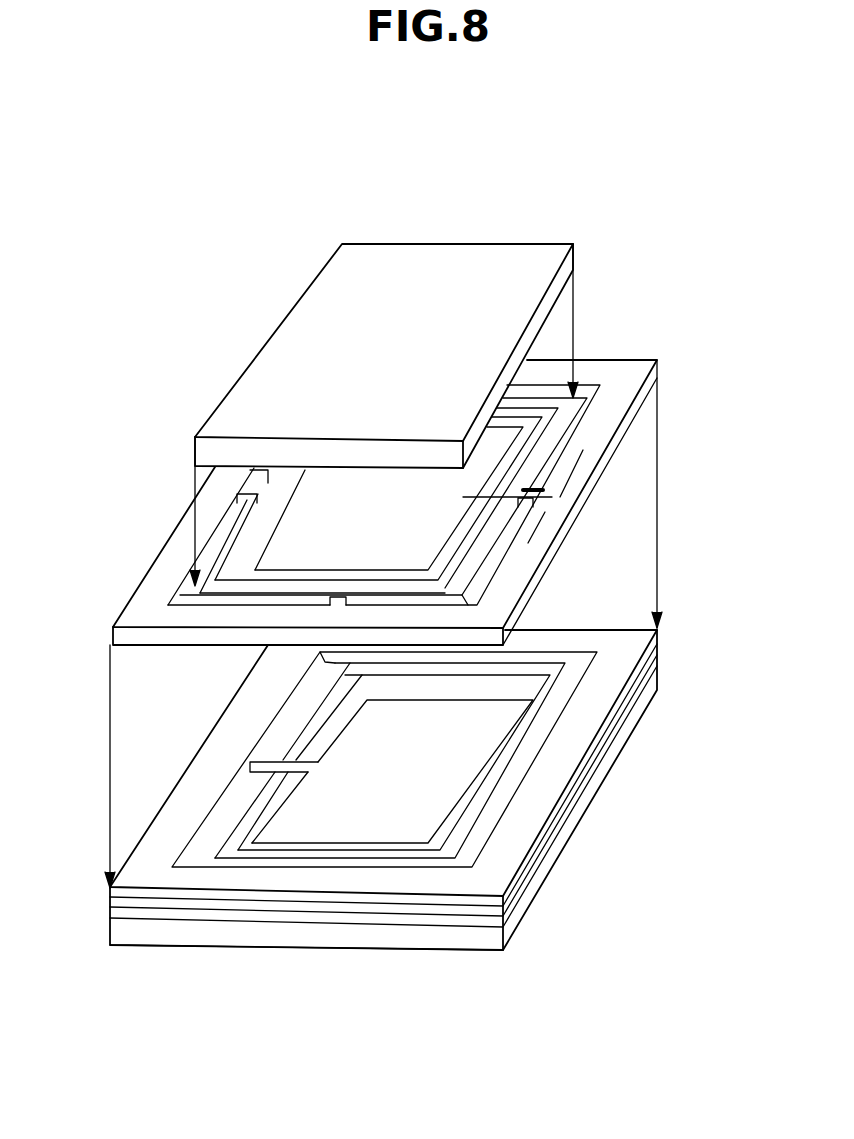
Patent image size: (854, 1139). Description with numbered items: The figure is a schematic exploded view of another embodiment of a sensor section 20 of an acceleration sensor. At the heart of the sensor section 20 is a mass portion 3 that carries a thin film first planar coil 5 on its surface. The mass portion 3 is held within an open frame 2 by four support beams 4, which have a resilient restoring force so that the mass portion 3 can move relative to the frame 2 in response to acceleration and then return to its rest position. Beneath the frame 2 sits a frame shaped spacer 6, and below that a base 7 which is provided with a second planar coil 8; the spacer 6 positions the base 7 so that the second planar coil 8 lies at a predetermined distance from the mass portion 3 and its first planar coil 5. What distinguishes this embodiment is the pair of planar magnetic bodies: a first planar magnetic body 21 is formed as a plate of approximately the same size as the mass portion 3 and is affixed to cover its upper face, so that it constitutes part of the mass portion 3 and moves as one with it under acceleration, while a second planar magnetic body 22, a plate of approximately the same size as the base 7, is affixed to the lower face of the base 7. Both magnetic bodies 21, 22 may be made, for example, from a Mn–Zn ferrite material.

The open frame 2 is at (646, 373).
The mass portion 3 is at (562, 432).
The support beams 4 is at (236, 502).
The first planar coil 5 is at (320, 572).
The spacer 6 is at (625, 647).
The base 7 is at (624, 713).
The second planar coil 8 is at (353, 727).
The sensor section 20 is at (598, 817).
The first planar magnetic body 21 is at (527, 264).
The second planar magnetic body 22 is at (456, 934).